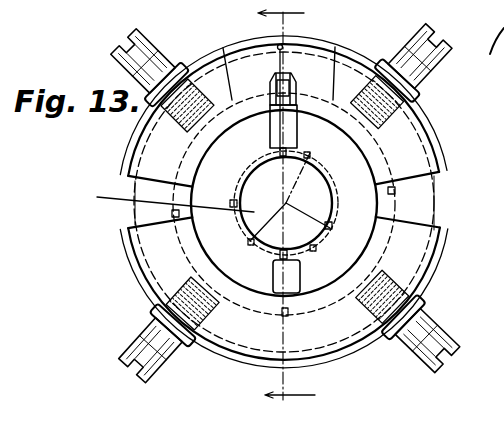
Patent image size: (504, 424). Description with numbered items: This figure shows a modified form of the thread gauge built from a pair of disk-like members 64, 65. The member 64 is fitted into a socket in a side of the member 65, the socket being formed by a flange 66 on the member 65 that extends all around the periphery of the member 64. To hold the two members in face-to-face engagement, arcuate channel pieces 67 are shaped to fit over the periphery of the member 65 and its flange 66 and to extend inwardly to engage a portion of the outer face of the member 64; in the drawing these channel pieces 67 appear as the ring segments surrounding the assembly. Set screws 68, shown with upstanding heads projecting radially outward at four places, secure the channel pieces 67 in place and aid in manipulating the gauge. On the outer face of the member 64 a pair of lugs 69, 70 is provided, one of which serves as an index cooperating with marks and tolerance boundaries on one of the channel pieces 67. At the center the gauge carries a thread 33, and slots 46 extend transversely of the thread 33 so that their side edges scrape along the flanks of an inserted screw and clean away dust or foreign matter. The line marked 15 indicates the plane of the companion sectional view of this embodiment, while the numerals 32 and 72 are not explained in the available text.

The section line 15- 15 is at (245, 22).
The lever arm 32 is at (159, 198).
The thread 33 is at (266, 163).
The slots 46 is at (282, 164).
The disk-like member 64 is at (331, 229).
The disk-like member 65 is at (437, 185).
The flange 66 is at (420, 205).
The arcuate channel pieces 67 is at (329, 72).
The set screws 68 is at (140, 62).
The lug 69 is at (278, 270).
The lug 70 is at (270, 132).
The adjacent member 72 is at (410, 413).